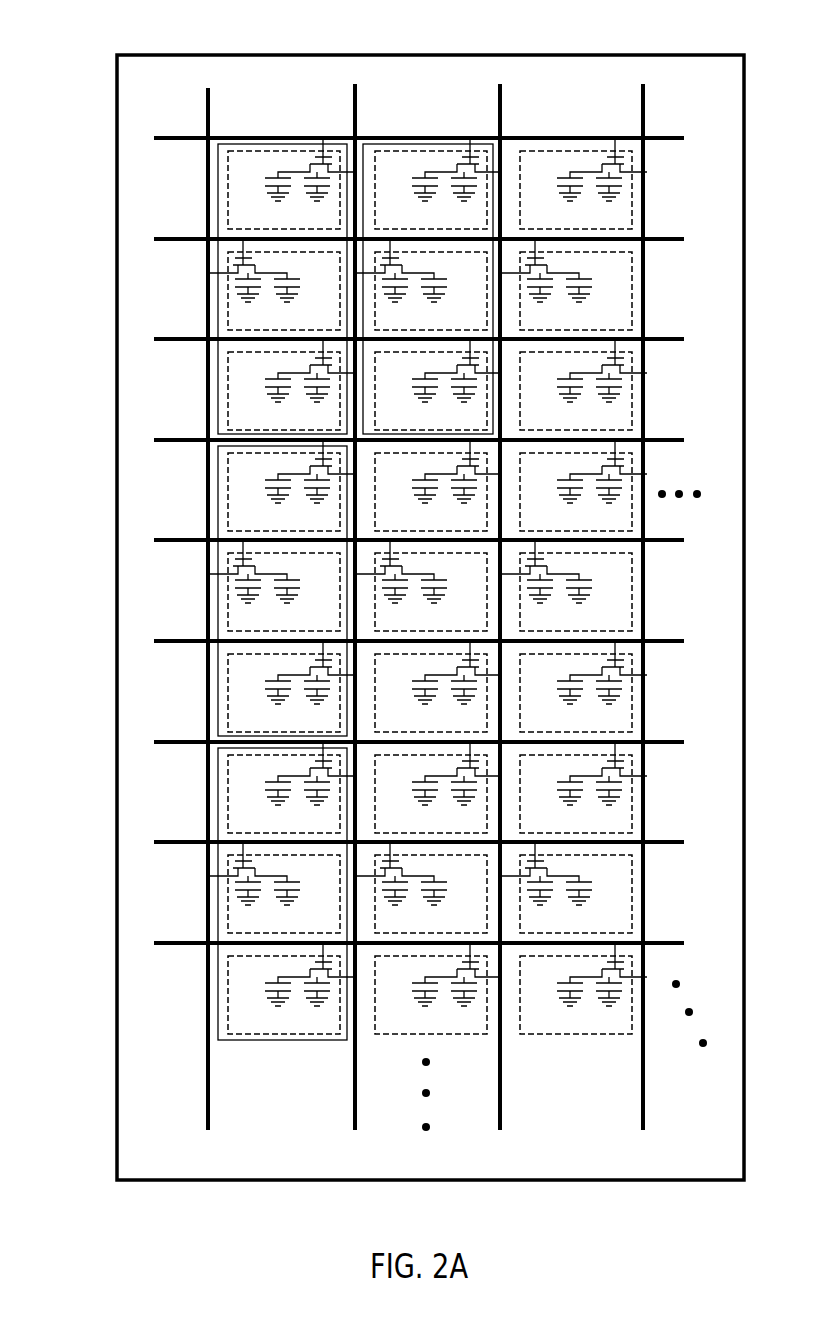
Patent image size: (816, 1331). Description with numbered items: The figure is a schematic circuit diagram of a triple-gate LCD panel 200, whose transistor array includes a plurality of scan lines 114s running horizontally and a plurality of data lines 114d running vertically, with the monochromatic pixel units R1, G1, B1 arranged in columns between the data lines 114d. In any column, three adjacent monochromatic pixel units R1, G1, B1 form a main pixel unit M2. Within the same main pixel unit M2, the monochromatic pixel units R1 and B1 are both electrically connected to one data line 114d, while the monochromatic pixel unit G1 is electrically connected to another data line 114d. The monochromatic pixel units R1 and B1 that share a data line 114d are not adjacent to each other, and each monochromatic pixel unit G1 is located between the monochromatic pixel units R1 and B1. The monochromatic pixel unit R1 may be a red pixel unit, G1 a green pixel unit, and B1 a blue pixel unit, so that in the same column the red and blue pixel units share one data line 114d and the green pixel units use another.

The triple-gate LCD panel 200 is at (695, 1240).
The data line 114d is at (208, 110).
The scan line 114s is at (168, 137).
The main pixel unit M2 is at (419, 143).
The monochromatic pixel unit R1 is at (550, 830).
The monochromatic pixel unit G1 is at (627, 930).
The monochromatic pixel unit B1 is at (550, 1031).